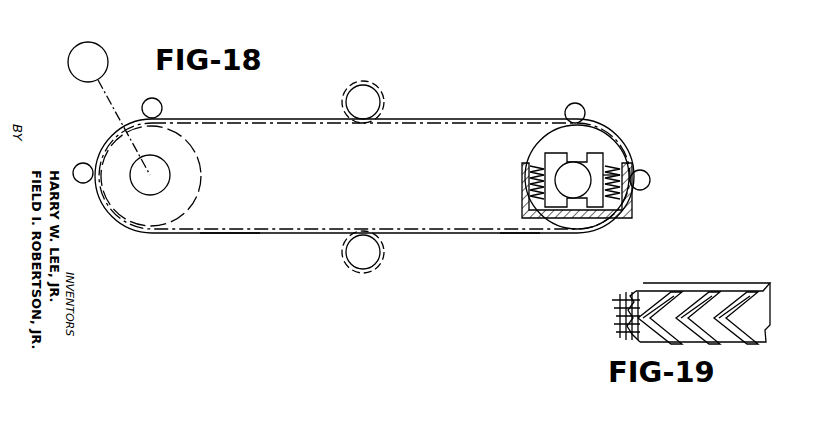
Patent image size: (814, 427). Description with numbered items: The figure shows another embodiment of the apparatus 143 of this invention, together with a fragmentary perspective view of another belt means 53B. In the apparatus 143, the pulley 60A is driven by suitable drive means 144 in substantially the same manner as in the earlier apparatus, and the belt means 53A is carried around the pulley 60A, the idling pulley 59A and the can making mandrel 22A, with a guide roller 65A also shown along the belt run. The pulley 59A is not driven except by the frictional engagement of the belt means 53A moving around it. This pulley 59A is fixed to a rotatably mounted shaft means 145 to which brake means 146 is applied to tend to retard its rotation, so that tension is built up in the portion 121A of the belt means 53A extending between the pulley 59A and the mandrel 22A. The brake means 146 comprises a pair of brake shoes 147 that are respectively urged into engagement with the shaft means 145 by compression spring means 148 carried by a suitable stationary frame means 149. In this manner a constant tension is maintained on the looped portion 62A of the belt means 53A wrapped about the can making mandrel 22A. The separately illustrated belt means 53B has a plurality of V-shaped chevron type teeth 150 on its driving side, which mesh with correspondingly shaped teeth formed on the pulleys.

In FIG. 18, the drive means 144 is at (73, 52).
In FIG. 18, the pulley 60A is at (197, 170).
In FIG. 18, the upper guide roller 65A is at (365, 104).
In FIG. 18, the belt means 53A is at (452, 122).
In FIG. 18, the brake shoes 147 is at (548, 160).
In FIG. 18, the pulley 59A is at (591, 130).
In FIG. 18, the compression spring means 148 is at (619, 168).
In FIG. 18, the stationary frame means 149 is at (632, 200).
In FIG. 18, the shaft means 145 is at (573, 180).
In FIG. 18, the brake means 146 is at (620, 194).
In FIG. 18, the apparatus 143 is at (234, 249).
In FIG. 18, the mandrel 22A is at (360, 252).
In FIG. 18, the looped portion 62A is at (377, 275).
In FIG. 18, the portion of the belt means 121A is at (527, 235).
In FIG. 19, the belt means 53B is at (711, 279).
In FIG. 19, the V-shaped chevron type teeth 150 is at (735, 338).